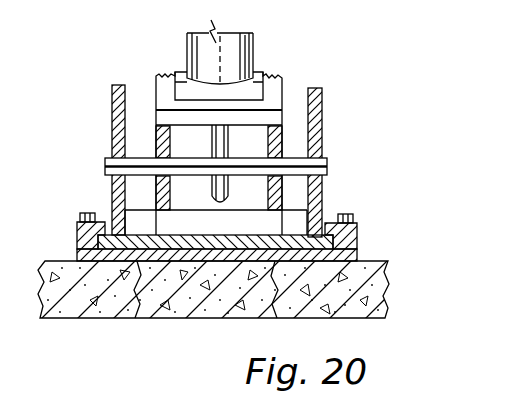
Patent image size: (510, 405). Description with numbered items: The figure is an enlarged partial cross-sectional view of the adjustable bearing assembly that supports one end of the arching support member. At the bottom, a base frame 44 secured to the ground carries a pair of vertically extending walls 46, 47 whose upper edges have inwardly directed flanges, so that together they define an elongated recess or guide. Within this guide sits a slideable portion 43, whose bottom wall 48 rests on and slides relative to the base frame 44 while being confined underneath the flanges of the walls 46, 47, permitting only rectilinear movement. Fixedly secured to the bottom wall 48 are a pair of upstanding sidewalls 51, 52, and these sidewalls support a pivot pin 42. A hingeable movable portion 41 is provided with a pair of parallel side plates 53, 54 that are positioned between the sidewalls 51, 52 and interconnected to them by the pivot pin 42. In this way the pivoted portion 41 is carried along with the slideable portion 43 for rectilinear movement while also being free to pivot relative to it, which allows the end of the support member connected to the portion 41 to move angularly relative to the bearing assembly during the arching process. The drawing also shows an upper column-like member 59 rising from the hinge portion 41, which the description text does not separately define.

The hingeable movable portion 41 is at (283, 134).
The pivot pin 42 is at (328, 170).
The slideable portion 43 is at (330, 132).
The base frame 44 is at (358, 262).
The vertically extending wall 46 is at (78, 222).
The vertically extending wall 47 is at (350, 240).
The bottom wall 48 is at (262, 236).
The upstanding sidewall 51 is at (120, 132).
The upstanding sidewall 52 is at (322, 146).
The side plate 53 is at (157, 190).
The side plate 54 is at (276, 185).
The column shaft 59 is at (248, 52).